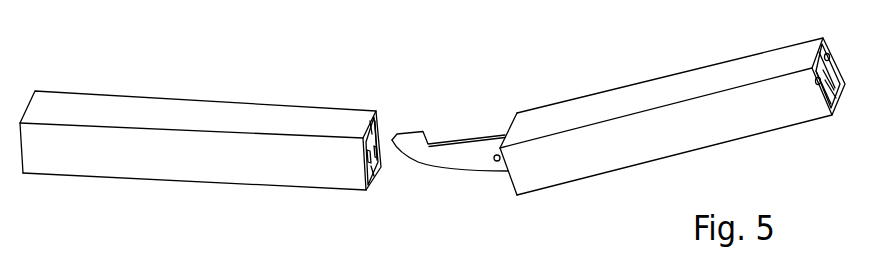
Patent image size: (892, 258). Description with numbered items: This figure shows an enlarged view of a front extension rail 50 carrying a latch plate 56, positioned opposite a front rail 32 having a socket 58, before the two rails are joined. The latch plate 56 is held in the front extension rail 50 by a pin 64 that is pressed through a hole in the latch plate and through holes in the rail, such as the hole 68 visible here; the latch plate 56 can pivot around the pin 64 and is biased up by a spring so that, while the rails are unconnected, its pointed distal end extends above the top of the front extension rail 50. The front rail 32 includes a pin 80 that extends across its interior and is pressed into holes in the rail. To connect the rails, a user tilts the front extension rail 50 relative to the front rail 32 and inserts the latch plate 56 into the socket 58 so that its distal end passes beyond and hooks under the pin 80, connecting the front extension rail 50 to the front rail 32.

The front rail 32 is at (245, 134).
The front extension rail 50 is at (672, 123).
The latch plate 56 is at (455, 152).
The socket 58 is at (378, 159).
The pin 64 is at (539, 149).
The hole 68 is at (539, 149).
The pin 80 is at (288, 149).